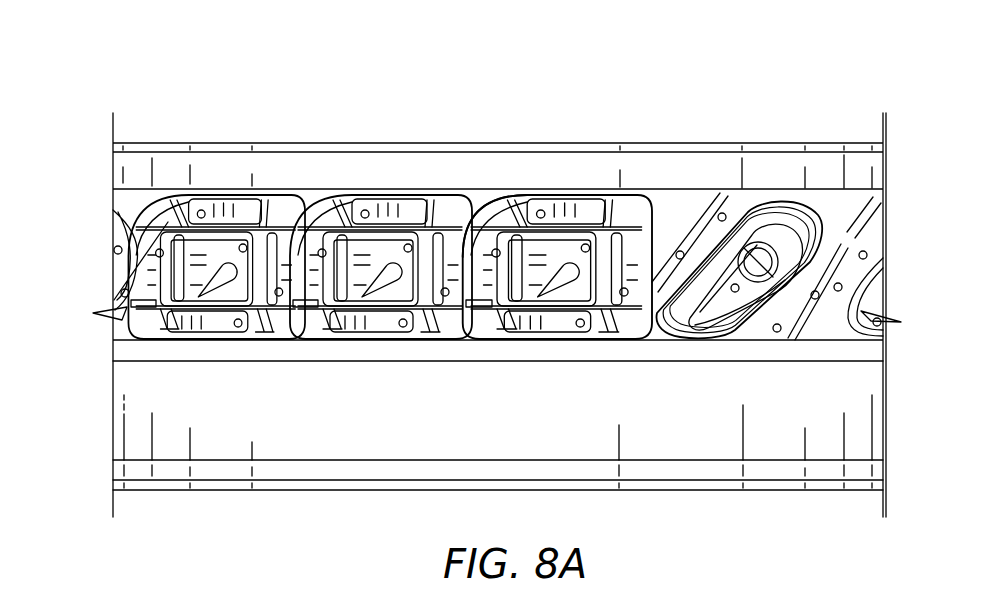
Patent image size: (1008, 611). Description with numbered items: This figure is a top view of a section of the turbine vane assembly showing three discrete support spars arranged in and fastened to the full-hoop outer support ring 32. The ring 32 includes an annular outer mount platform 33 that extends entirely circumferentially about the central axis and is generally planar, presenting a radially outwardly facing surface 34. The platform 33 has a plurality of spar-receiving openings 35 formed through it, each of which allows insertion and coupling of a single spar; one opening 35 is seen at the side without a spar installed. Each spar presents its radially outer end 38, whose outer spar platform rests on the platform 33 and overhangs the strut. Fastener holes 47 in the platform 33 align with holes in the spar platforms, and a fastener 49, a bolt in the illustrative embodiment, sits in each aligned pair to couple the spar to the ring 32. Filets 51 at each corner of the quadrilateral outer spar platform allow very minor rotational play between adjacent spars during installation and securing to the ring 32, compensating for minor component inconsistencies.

The full-hoop outer support ring 32 is at (147, 73).
The annular outer mount platform 33 is at (146, 418).
The radially outwardly facing surface 34 is at (140, 416).
The spar-receiving opening 35 is at (802, 230).
The radially outer end 38 is at (243, 190).
The fastener holes 47 is at (729, 214).
The fastener 49 is at (580, 343).
The filets 51 is at (643, 190).